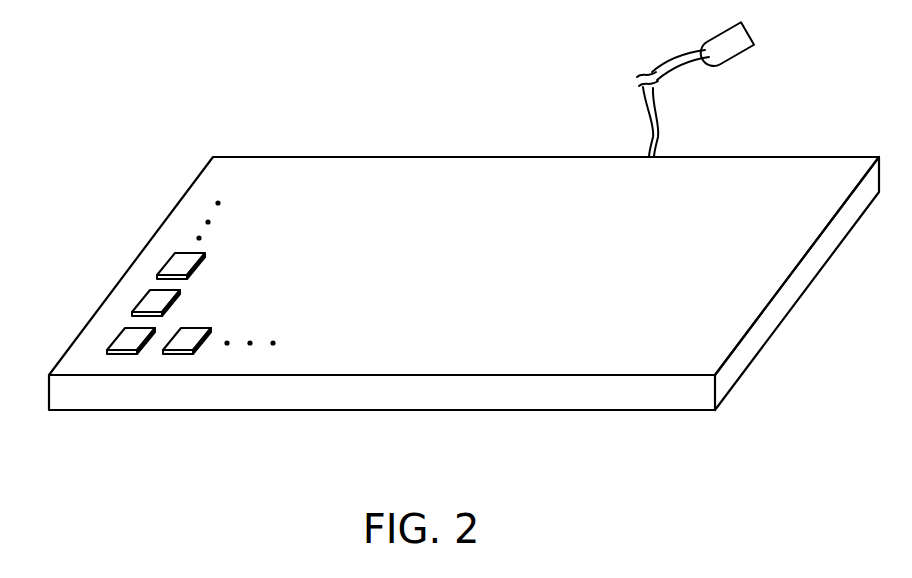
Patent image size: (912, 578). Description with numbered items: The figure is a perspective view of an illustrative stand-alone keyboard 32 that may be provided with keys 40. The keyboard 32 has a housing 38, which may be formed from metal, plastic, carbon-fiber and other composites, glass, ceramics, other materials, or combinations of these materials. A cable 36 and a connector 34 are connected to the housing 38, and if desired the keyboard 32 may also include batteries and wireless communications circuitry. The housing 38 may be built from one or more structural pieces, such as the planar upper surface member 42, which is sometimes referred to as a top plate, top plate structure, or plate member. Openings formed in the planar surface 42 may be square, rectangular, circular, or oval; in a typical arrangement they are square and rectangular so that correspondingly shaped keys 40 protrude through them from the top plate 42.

The keyboard 32 is at (518, 95).
The connector 34 is at (737, 42).
The cable 36 is at (659, 119).
The housing 38 is at (745, 347).
The keys 40 is at (150, 302).
The planar upper surface member 42 is at (82, 362).